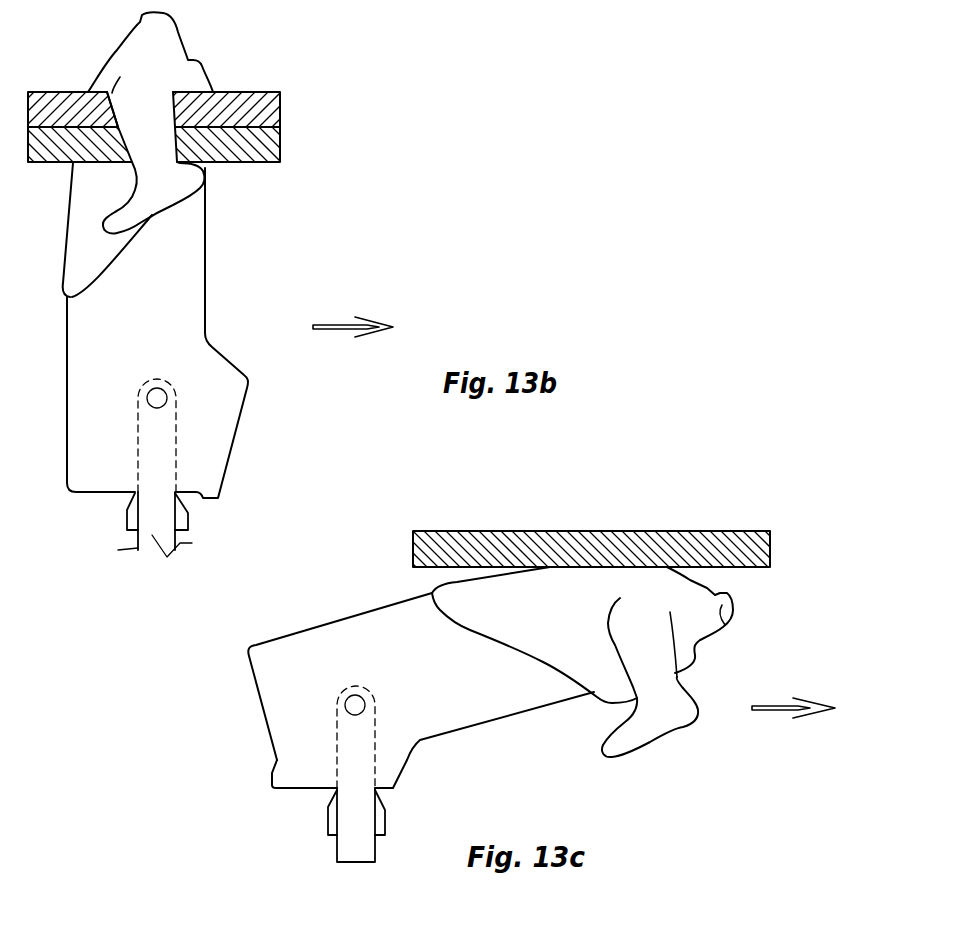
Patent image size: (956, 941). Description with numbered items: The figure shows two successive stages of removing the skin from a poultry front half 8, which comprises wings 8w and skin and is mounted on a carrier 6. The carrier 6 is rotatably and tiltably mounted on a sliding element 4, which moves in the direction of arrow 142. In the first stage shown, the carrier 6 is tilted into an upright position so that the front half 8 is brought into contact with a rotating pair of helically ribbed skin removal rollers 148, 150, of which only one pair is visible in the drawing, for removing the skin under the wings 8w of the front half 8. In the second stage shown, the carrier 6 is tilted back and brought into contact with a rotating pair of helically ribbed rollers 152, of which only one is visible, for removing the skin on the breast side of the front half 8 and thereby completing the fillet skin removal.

In FIG. 13B, the sliding element 4 is at (153, 517).
In FIG. 13C, the sliding element 4 is at (348, 822).
In FIG. 13B, the carrier 6 is at (117, 407).
In FIG. 13C, the carrier 6 is at (312, 713).
In FIG. 13B, the front half 8 is at (108, 35).
In FIG. 13C, the front half 8 is at (536, 660).
In FIG. 13B, the wings 8w is at (150, 107).
In FIG. 13C, the wings 8w is at (670, 708).
In FIG. 13B, the arrow 142 is at (355, 333).
In FIG. 13C, the arrow 142 is at (788, 717).
In FIG. 13B, the skin removal roller 148 is at (260, 108).
In FIG. 13B, the skin removal roller 150 is at (257, 152).
In FIG. 13C, the helically ribbed roller 152 is at (663, 550).